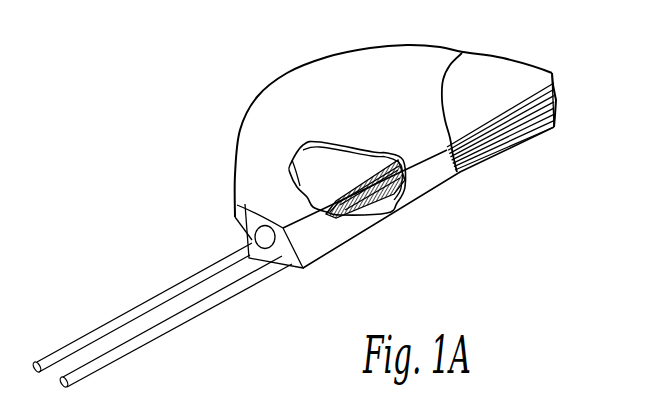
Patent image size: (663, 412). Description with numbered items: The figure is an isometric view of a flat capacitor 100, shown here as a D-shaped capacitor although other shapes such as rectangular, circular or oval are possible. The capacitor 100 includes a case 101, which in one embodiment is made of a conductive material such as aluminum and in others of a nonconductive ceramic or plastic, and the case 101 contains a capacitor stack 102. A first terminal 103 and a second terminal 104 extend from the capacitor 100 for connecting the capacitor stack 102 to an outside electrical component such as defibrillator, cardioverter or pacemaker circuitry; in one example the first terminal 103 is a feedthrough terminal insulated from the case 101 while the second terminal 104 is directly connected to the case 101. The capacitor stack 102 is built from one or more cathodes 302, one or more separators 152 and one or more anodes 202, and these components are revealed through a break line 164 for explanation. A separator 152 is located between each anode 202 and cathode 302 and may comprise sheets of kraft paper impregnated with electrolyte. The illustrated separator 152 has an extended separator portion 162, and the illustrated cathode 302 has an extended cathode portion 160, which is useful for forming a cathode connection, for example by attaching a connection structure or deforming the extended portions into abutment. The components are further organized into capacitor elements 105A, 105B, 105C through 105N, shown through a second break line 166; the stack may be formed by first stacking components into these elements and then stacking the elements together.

The flat capacitor 100 is at (155, 58).
The case 101 is at (422, 47).
The capacitor stack 102 is at (553, 73).
The first terminal 103 is at (158, 293).
The second terminal 104 is at (198, 312).
The capacitor element 105N is at (555, 82).
The capacitor element 105C is at (557, 94).
The capacitor element 105B is at (555, 113).
The capacitor element 105A is at (555, 128).
The separator 152 is at (350, 194).
The extended cathode portion 160 is at (380, 150).
The extended separator portion 162 is at (373, 178).
The break line 164 is at (318, 148).
The break line 166 is at (452, 90).
The anode 202 is at (290, 162).
The cathode 302 is at (383, 212).